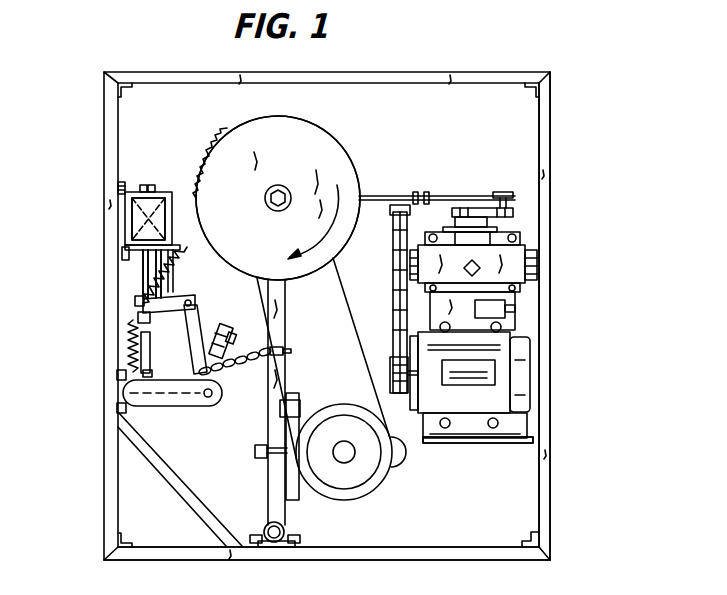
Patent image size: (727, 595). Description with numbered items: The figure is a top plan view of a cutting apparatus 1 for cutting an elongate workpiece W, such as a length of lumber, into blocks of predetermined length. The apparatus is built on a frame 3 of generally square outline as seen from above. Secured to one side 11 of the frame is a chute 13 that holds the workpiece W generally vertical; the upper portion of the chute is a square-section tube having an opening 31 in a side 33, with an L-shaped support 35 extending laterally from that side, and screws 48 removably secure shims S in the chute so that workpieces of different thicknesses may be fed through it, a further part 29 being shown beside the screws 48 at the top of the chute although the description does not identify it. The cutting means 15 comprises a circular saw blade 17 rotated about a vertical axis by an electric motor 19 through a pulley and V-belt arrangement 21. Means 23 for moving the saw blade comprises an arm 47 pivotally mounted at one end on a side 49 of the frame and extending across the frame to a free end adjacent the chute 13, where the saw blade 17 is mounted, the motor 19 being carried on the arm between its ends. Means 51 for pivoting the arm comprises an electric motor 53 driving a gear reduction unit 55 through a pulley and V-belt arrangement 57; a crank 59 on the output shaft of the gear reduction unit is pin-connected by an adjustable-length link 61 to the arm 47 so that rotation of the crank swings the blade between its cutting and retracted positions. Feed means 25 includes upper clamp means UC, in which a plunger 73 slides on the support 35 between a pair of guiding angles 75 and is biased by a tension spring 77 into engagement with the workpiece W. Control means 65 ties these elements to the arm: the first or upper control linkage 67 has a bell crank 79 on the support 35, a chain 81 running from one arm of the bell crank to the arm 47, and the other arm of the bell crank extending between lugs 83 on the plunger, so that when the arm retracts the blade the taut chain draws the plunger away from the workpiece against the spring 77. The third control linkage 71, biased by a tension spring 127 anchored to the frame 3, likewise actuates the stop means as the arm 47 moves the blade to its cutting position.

The cutting apparatus 1 is at (386, 70).
The frame 3 is at (557, 168).
The one side of the frame 11 is at (112, 355).
The chute 13 is at (168, 190).
The cutting means 15 is at (362, 152).
The circular saw blade 17 is at (318, 132).
The electric motor 19 is at (382, 477).
The pulley and V-belt arrangement 21 is at (351, 341).
The means for moving the saw blade 23 is at (458, 453).
The feed means 25 is at (210, 312).
The adjusting nut 29 is at (143, 185).
The opening 31 is at (150, 268).
The side of the upper chute portion 33 is at (123, 257).
The L-shaped support 35 is at (190, 294).
The arm 47 is at (281, 340).
The screws 48 is at (153, 185).
The side of the frame 49 is at (428, 559).
The means for pivoting the arm 51 is at (530, 364).
The electric motor 53 is at (530, 413).
The gear reduction unit 55 is at (513, 258).
The pulley and V-belt arrangement 57 is at (394, 244).
The crank 59 is at (517, 212).
The link 61 is at (380, 196).
The control means 65 is at (210, 322).
The first or upper control linkage 67 is at (180, 352).
The third control linkage 71 is at (228, 402).
The plunger 73 is at (150, 280).
The angles 75 is at (147, 273).
The tension spring 77 is at (187, 264).
The bell crank 79 is at (186, 324).
The chain 81 is at (246, 360).
The lugs 83 is at (140, 303).
The tension spring 127 is at (133, 340).
The shims S is at (122, 198).
The workpiece W is at (135, 220).
The upper clamp means UC is at (143, 290).